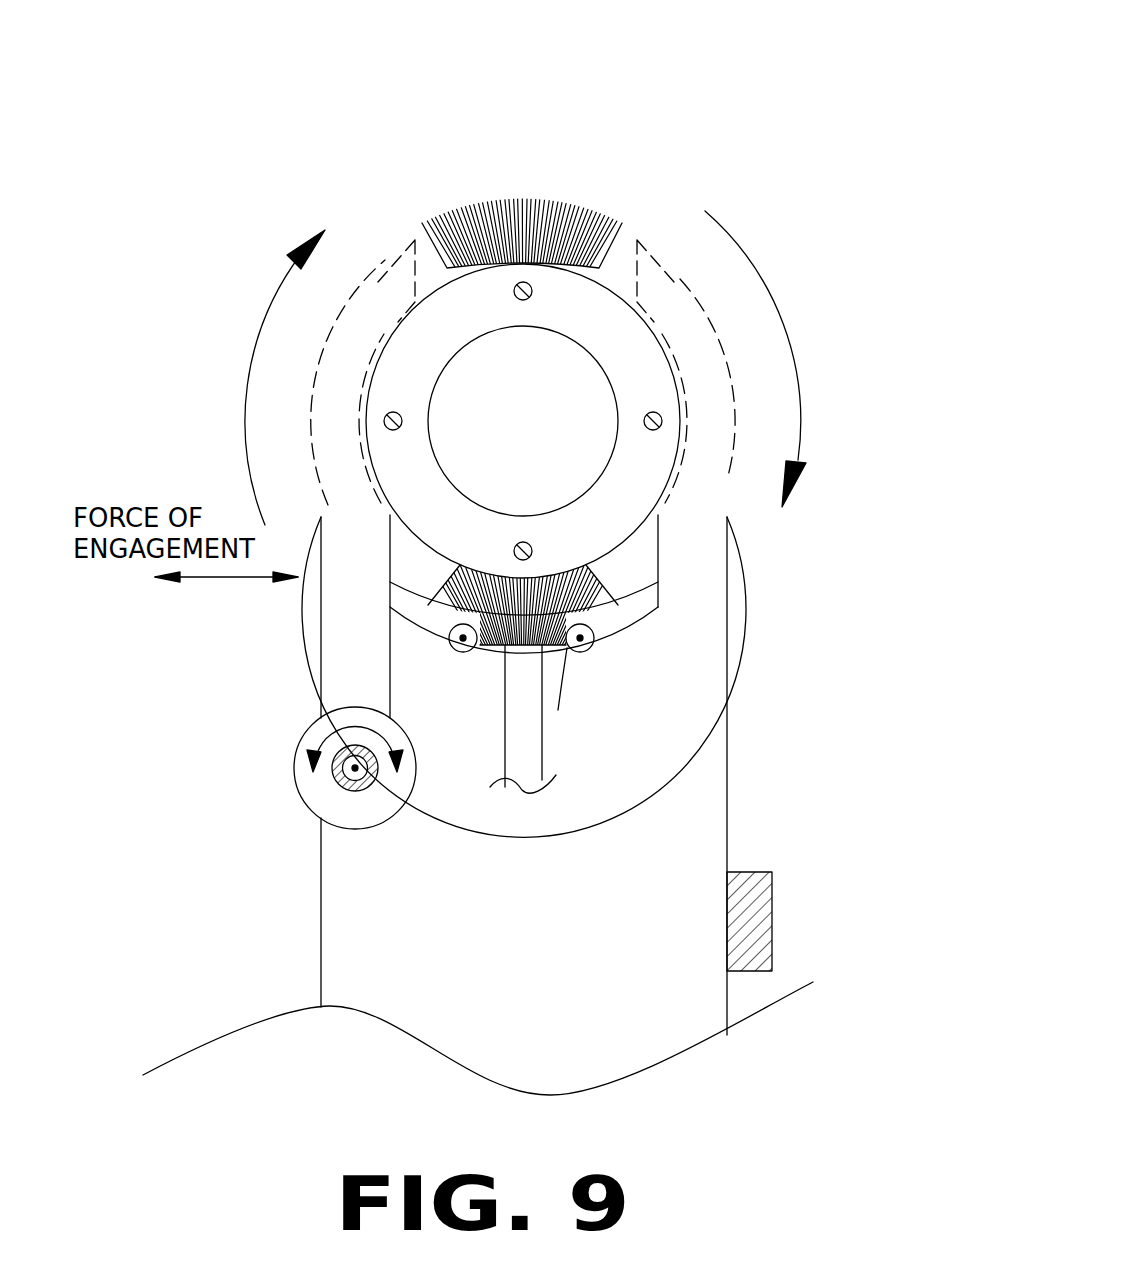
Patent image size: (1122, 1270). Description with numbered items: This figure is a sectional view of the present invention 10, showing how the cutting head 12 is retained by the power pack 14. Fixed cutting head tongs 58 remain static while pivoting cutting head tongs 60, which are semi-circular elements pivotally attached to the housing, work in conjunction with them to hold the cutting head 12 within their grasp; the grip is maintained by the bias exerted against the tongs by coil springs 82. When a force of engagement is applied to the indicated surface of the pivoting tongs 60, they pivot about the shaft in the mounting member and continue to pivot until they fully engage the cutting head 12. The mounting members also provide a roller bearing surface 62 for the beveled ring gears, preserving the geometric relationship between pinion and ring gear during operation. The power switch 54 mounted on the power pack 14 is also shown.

The present invention 10 is at (628, 112).
The cutting head 12 is at (513, 213).
The power pack 14 is at (320, 865).
The power switch 54 is at (773, 917).
The fixed cutting head tongs 58 is at (688, 290).
The pivoting cutting head tongs 60 is at (385, 260).
The roller bearing surface 62 is at (455, 648).
The coil springs 82 is at (352, 825).